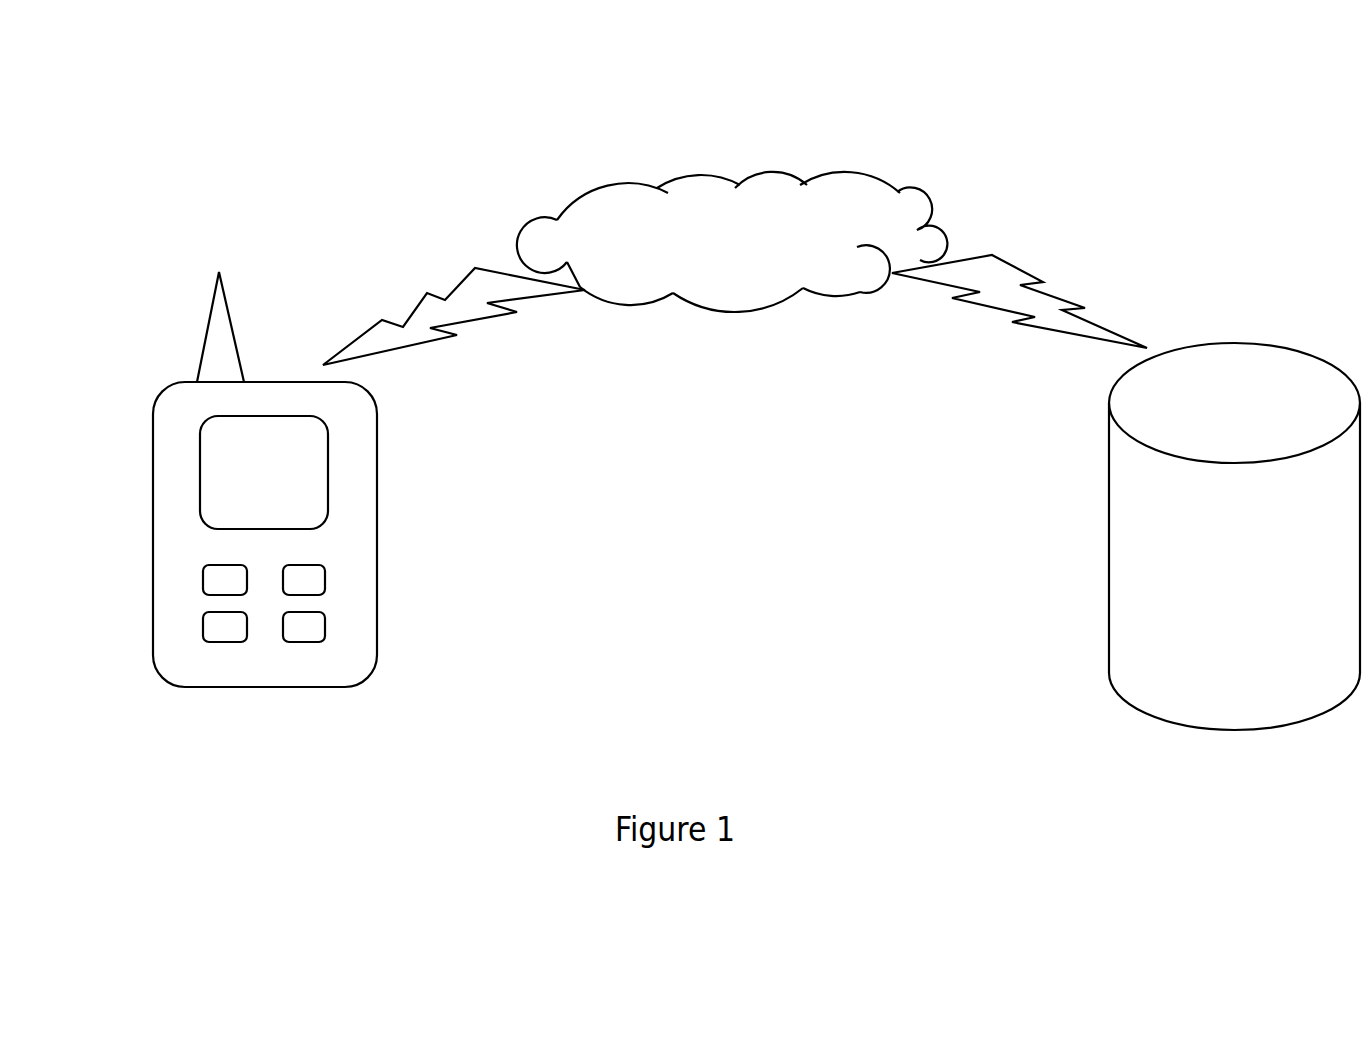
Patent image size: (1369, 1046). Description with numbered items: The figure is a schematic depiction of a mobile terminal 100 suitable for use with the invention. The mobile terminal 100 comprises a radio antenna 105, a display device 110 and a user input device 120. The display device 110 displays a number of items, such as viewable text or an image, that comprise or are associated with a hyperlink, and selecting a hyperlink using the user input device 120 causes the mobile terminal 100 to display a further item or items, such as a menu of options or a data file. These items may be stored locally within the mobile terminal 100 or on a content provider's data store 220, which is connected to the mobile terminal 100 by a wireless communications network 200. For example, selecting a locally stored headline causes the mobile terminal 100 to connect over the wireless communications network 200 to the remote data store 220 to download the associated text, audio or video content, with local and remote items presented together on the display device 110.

The mobile terminal 100 is at (137, 380).
The radio antenna 105 is at (213, 290).
The display device 110 is at (290, 463).
The user input device 120 is at (308, 582).
The wireless communications network 200 is at (752, 198).
The content provider's data store 220 is at (1208, 383).